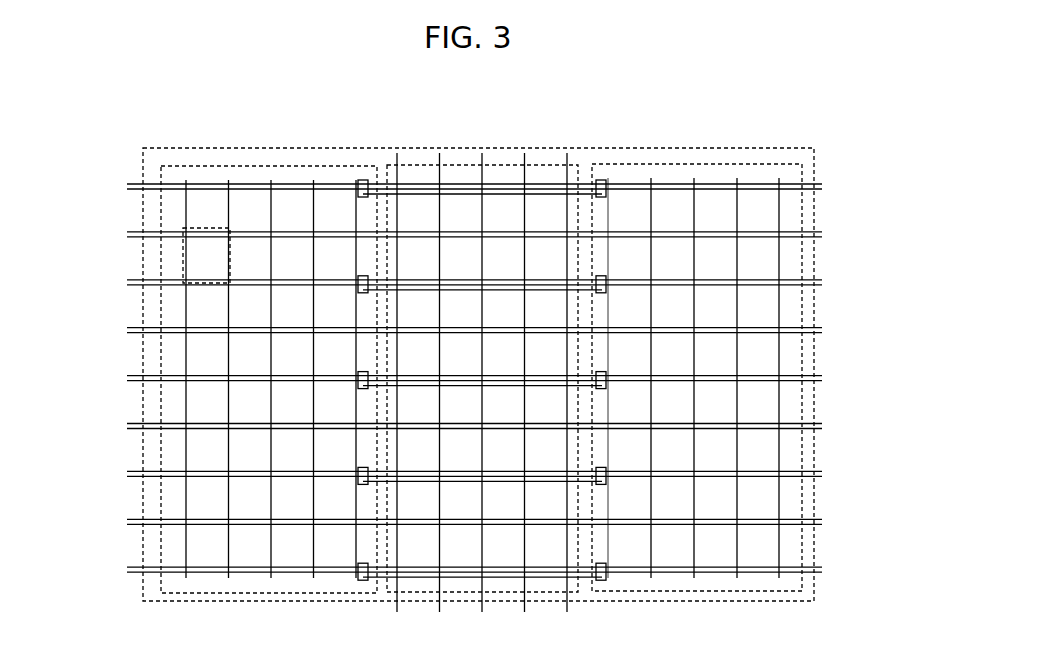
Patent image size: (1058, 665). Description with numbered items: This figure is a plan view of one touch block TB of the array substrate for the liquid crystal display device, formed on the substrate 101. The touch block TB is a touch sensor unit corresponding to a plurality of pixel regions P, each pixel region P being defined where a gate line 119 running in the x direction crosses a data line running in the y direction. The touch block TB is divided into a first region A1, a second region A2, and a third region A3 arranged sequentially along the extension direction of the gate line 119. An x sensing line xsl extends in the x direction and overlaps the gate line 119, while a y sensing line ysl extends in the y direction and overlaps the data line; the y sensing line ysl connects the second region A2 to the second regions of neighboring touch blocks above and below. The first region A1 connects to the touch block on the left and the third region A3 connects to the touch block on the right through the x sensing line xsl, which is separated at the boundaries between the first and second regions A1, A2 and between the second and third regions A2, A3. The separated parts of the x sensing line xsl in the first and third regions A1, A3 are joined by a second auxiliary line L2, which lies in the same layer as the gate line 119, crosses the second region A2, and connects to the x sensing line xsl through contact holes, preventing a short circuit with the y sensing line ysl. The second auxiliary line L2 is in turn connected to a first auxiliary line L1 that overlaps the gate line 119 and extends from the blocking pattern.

The substrate 101 is at (821, 128).
The first region A1 is at (253, 163).
The second region A2 is at (451, 163).
The third region A3 is at (688, 163).
The pixel region P is at (198, 262).
The x sensing line xsl is at (470, 345).
The y sensing line ysl is at (187, 202).
The first auxiliary line L1 is at (326, 188).
The gate line 119 is at (474, 155).
The second auxiliary line L2 is at (425, 192).
The touch block TB is at (546, 148).